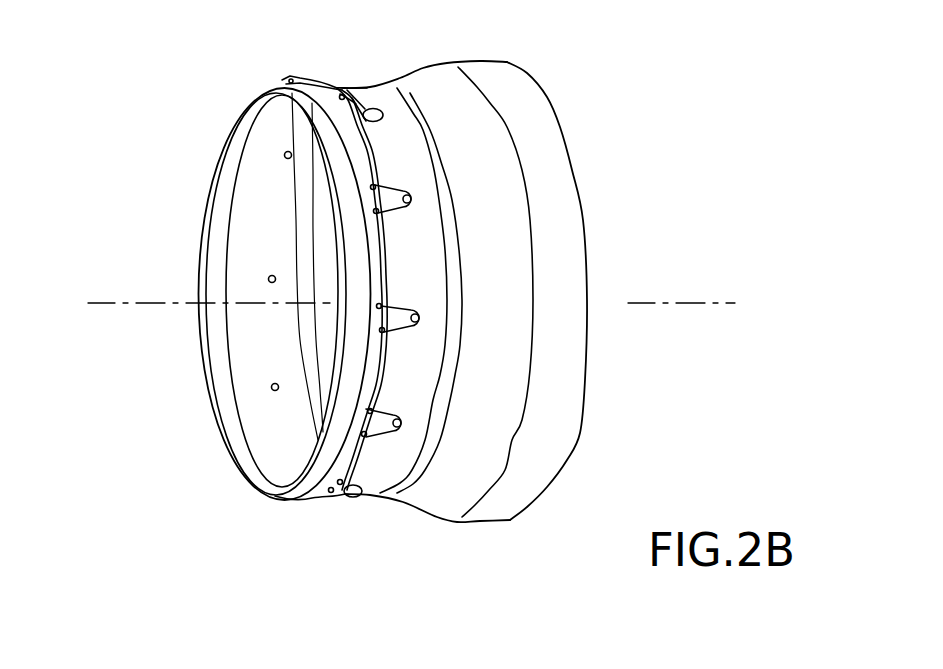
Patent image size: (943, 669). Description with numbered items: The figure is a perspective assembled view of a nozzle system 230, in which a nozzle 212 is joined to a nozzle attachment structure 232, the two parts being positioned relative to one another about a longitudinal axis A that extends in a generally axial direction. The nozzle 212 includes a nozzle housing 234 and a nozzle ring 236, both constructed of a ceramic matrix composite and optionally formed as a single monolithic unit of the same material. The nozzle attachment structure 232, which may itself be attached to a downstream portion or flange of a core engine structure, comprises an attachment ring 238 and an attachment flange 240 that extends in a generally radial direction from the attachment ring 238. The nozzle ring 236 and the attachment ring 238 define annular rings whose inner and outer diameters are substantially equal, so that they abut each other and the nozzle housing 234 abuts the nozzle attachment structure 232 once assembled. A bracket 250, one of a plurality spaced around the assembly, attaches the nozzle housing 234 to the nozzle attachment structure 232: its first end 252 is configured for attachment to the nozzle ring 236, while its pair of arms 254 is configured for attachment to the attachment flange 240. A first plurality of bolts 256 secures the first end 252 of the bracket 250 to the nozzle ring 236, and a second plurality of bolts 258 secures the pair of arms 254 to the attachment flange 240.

The nozzle 212 is at (432, 502).
The nozzle system 230 is at (172, 86).
The nozzle attachment structure 232 is at (241, 141).
The nozzle housing 234 is at (532, 488).
The nozzle ring 236 is at (408, 275).
The attachment ring 238 is at (327, 463).
The attachment flange 240 is at (380, 378).
The bracket 250 is at (413, 181).
The first end 252 is at (415, 212).
The pair of arms 254 is at (382, 180).
The first plurality of bolts 256 is at (375, 108).
The second plurality of bolts 258 is at (350, 92).
The longitudinal axis A is at (709, 305).